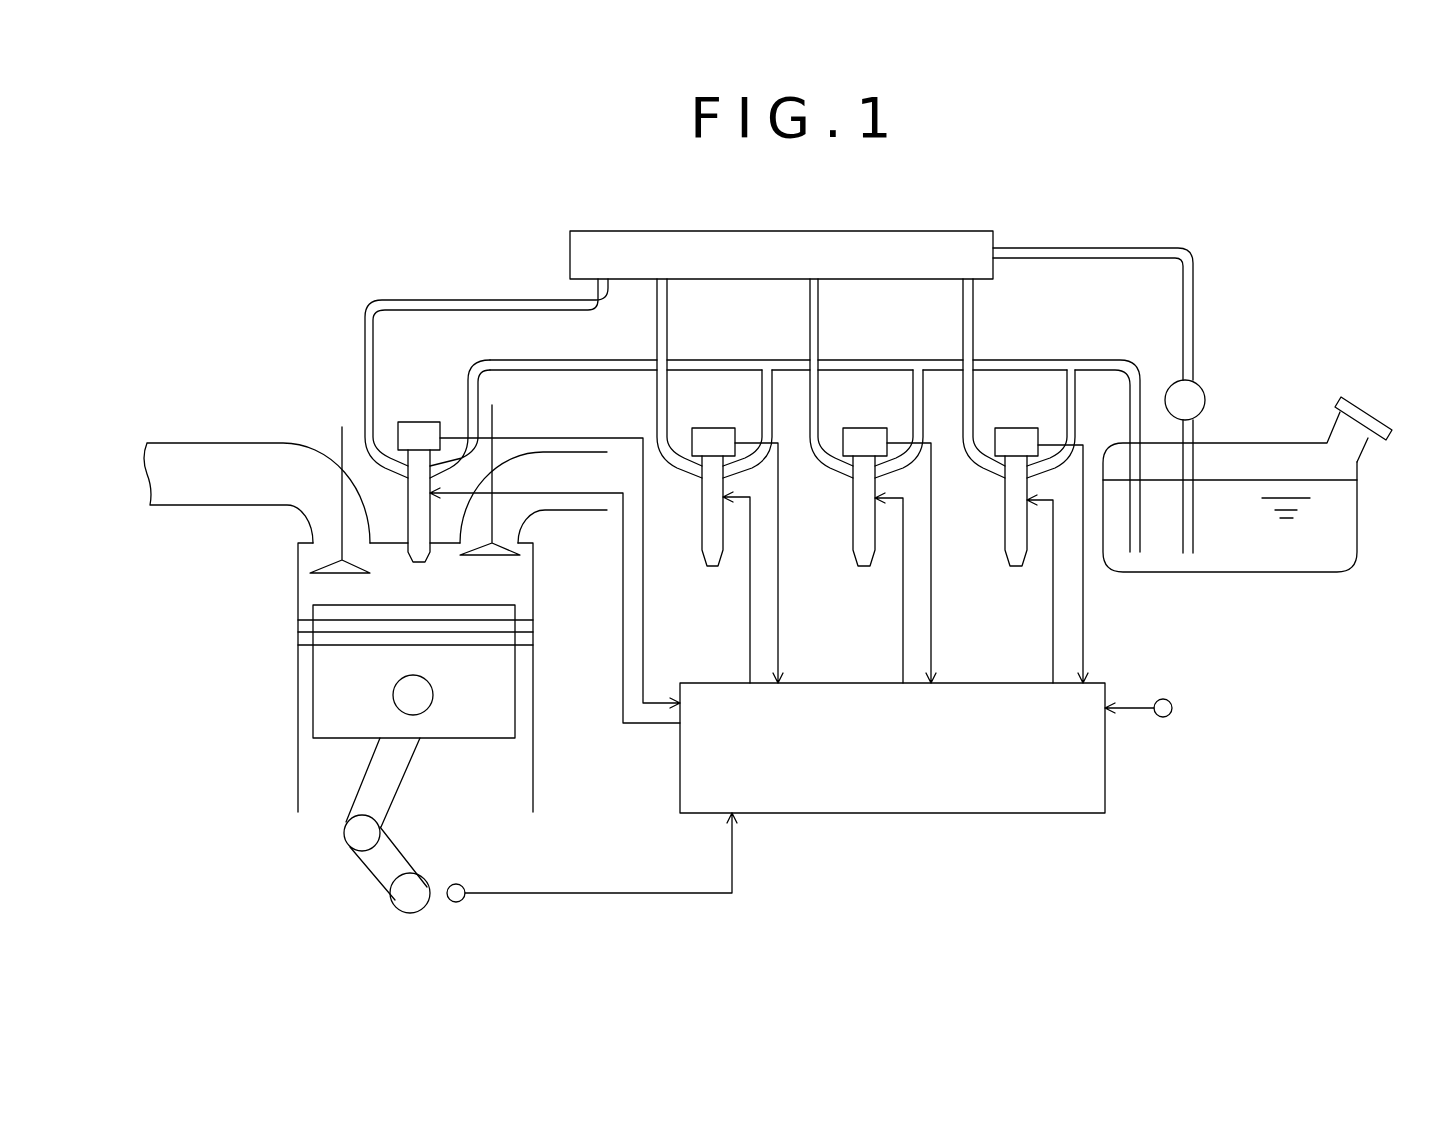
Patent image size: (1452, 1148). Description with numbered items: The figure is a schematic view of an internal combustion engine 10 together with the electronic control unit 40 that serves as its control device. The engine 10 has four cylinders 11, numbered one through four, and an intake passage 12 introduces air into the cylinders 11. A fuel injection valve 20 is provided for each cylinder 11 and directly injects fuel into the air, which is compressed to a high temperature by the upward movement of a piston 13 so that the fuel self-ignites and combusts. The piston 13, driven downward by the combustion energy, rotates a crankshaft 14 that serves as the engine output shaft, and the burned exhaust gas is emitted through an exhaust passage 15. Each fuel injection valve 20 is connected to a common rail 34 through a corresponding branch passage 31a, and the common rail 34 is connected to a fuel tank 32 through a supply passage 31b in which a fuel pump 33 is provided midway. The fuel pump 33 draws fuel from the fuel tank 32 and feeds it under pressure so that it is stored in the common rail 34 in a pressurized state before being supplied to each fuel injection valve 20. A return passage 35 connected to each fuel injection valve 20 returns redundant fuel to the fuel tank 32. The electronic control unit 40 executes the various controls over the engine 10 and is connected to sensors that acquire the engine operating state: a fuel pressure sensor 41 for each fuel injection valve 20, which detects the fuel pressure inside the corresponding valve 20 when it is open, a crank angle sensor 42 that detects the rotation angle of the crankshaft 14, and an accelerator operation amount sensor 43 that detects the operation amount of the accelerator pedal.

The internal combustion engine 10 is at (580, 768).
The cylinder 11 is at (533, 580).
The intake passage 12 is at (217, 446).
The piston 13 is at (487, 738).
The crankshaft 14 is at (394, 898).
The exhaust passage 15 is at (572, 451).
The fuel injection valve 20 is at (432, 553).
The branch passage 31a is at (463, 300).
The supply passage 31b is at (1111, 247).
The fuel tank 32 is at (1358, 505).
The fuel pump 33 is at (1207, 400).
The common rail 34 is at (781, 231).
The return passage 35 is at (610, 357).
The electronic control unit 40 is at (1108, 787).
The fuel pressure sensor 41 is at (417, 421).
The crank angle sensor 42 is at (454, 884).
The accelerator operation amount sensor 43 is at (1173, 708).